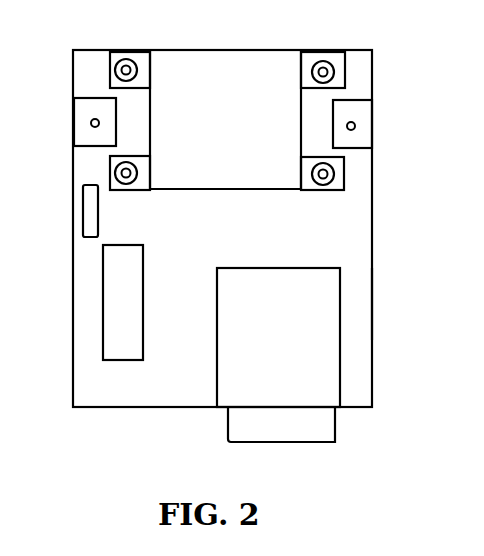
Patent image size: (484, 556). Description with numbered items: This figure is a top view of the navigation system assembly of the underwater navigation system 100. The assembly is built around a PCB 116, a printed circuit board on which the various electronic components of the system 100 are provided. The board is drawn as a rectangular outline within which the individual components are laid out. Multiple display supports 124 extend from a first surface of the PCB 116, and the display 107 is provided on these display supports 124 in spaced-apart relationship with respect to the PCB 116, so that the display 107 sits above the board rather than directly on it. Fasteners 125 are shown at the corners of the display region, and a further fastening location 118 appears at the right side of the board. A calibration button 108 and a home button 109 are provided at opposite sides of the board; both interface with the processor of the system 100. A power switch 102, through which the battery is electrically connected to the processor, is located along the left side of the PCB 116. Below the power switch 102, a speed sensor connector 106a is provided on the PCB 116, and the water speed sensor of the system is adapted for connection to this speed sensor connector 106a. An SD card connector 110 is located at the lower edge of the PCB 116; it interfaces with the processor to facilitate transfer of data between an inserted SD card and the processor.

The underwater navigation system 100 is at (374, 80).
The power switch 102 is at (99, 223).
The speed sensor connector 106a is at (121, 333).
The display 107 is at (262, 78).
The calibration button 108 is at (76, 102).
The home button 109 is at (362, 162).
The SD card connector 110 is at (297, 422).
The PCB 116 is at (376, 305).
The right mounting tab 118 is at (408, 124).
The display supports 124 is at (344, 193).
The screw fasteners 125 is at (305, 80).